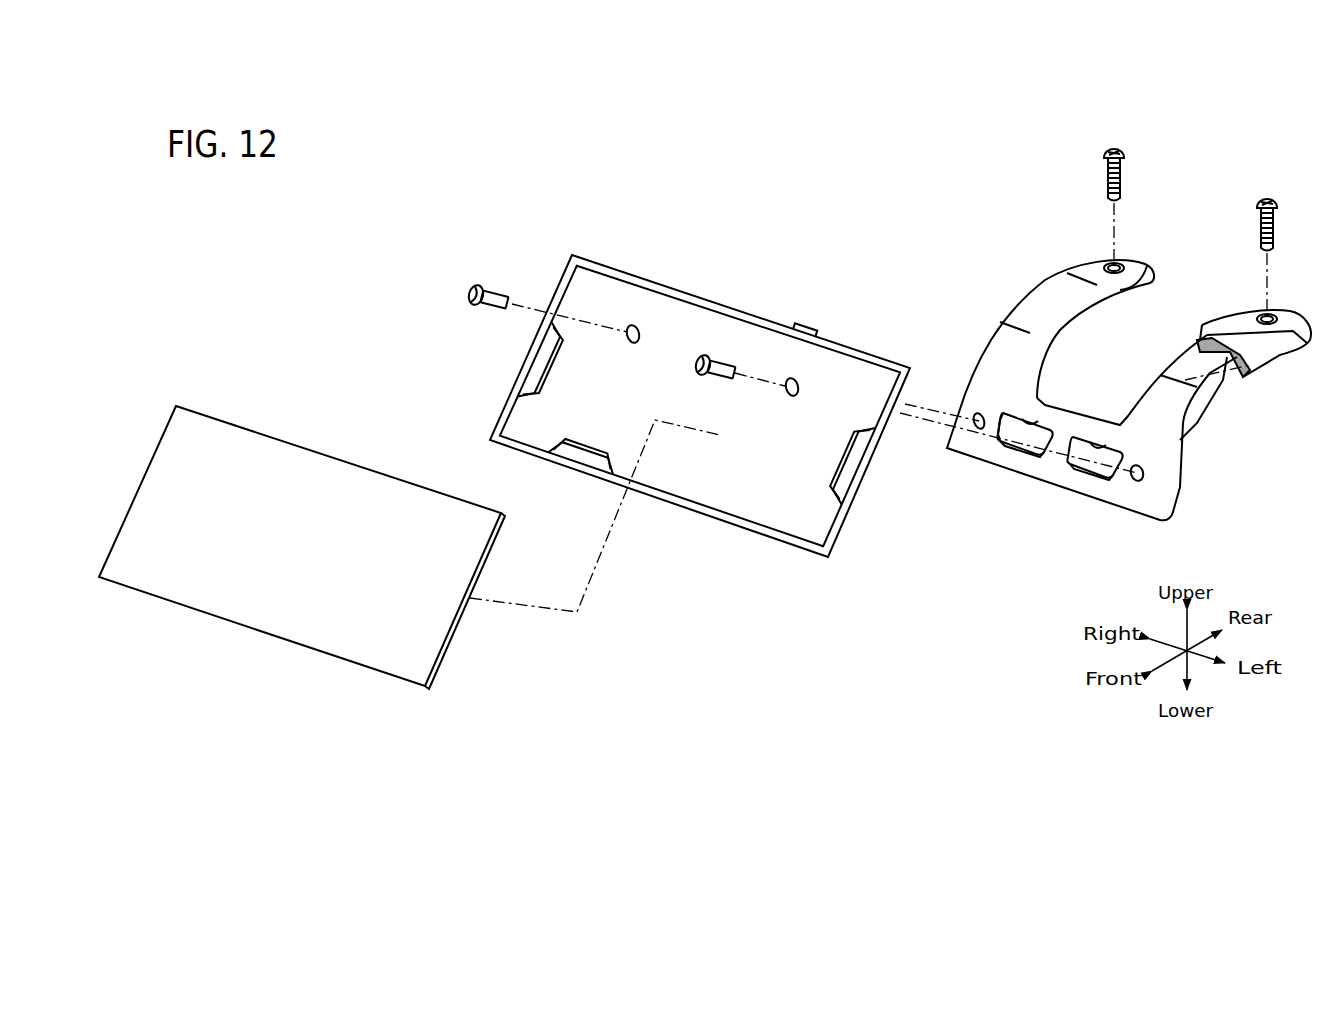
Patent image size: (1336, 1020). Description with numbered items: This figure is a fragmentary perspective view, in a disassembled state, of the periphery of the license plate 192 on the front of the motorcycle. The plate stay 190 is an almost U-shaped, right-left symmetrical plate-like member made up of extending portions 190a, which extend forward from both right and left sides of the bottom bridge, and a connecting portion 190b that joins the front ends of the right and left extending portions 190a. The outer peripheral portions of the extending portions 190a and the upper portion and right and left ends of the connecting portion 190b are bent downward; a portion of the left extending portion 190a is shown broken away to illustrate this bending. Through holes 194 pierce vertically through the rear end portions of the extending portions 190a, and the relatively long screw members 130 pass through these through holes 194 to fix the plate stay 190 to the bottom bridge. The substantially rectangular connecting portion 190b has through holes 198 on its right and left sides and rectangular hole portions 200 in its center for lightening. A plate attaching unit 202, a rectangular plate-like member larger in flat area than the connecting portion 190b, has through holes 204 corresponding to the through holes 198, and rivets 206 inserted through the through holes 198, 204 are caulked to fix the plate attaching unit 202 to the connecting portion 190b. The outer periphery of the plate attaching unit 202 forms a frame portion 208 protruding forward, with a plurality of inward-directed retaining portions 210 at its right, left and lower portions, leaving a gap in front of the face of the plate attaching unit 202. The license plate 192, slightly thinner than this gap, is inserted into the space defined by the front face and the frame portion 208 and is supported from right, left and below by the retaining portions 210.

The screw member 130 is at (1244, 232).
The plate stay 190 is at (1105, 380).
The extending portion 190a is at (1043, 296).
The connecting portion 190b is at (1050, 468).
The license plate 192 is at (300, 624).
The through hole 194 is at (1108, 262).
The through hole 198 is at (975, 413).
The rectangular hole portion 200 is at (1093, 440).
The plate attaching unit 202 is at (687, 392).
The through hole 204 is at (789, 378).
The rivet 206 is at (468, 293).
The frame portion 208 is at (812, 334).
The retaining portion 210 is at (535, 368).